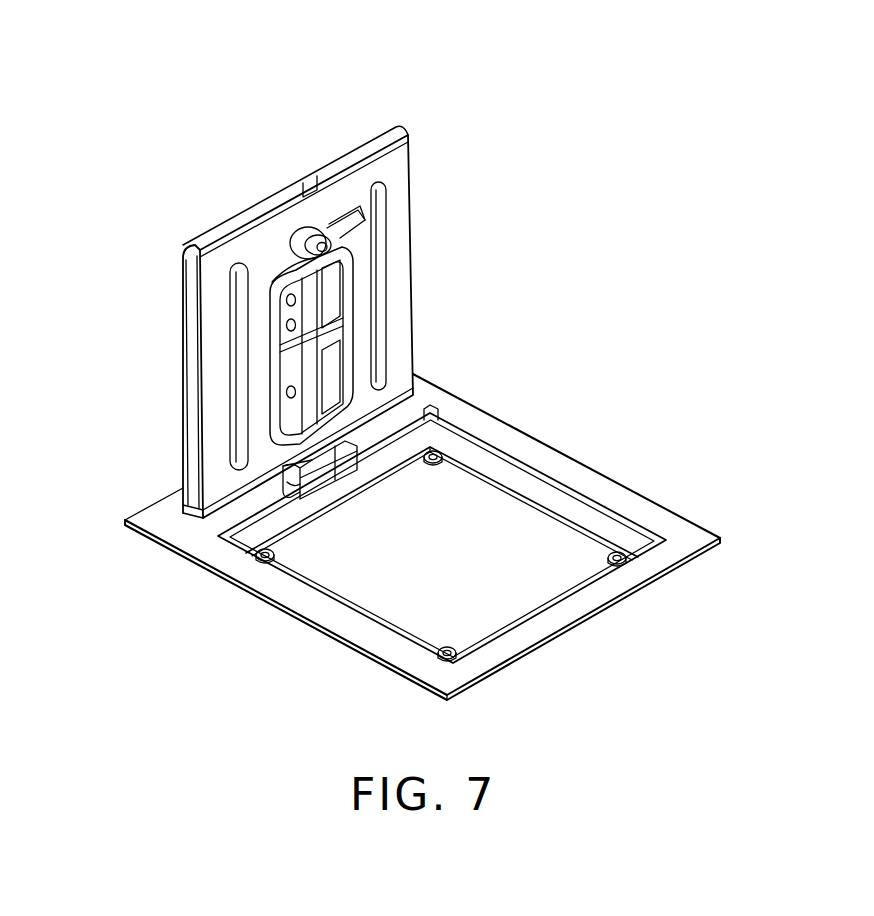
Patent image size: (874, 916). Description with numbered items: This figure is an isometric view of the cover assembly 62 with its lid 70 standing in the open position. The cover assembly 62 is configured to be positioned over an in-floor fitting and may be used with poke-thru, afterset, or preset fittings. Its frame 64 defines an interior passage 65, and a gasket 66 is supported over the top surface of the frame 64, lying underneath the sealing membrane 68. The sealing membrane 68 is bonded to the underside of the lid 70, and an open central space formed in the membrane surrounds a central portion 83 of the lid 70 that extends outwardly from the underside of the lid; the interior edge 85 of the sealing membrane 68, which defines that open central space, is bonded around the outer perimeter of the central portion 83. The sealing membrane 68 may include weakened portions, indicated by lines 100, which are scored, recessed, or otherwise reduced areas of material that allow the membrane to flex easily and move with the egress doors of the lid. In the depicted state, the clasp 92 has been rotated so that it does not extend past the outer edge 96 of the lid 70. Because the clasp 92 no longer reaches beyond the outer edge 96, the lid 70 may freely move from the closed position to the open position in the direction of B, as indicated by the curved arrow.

The cover assembly 62 is at (773, 660).
The frame 64 is at (695, 533).
The interior passage 65 is at (538, 572).
The gasket 66 is at (510, 457).
The sealing membrane 68 is at (296, 222).
The lid 70 is at (414, 168).
The central portion 83 is at (357, 298).
The interior edge 85 is at (288, 270).
The clasp 92 is at (341, 227).
The outer edge 96 is at (290, 250).
The weakened portions 100 is at (232, 342).
The direction of lid opening B is at (512, 258).